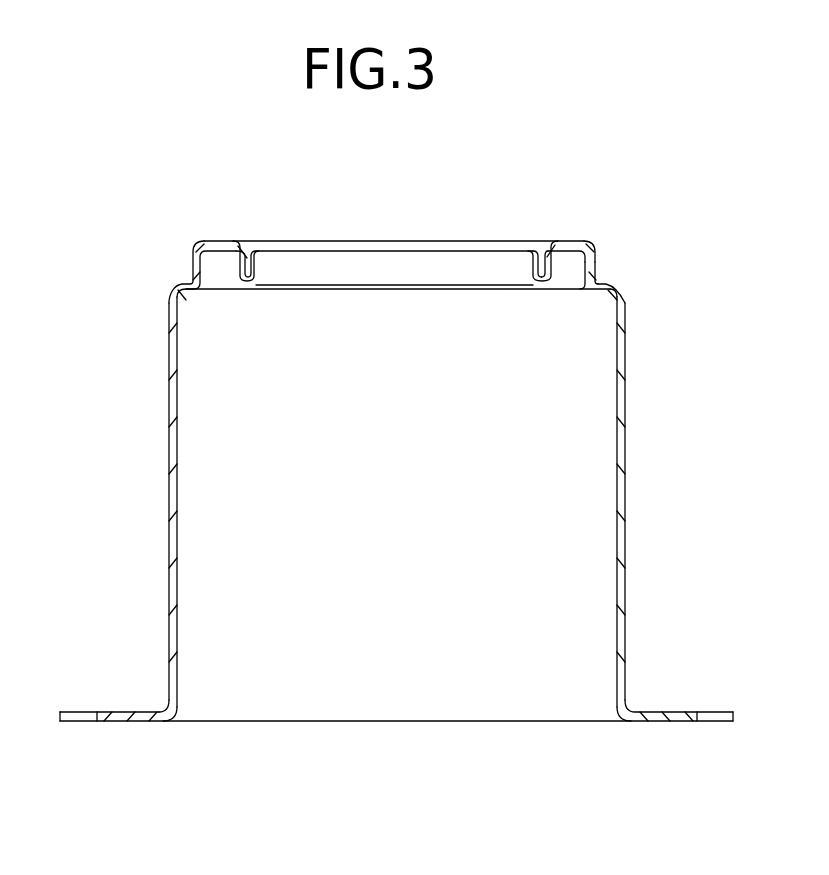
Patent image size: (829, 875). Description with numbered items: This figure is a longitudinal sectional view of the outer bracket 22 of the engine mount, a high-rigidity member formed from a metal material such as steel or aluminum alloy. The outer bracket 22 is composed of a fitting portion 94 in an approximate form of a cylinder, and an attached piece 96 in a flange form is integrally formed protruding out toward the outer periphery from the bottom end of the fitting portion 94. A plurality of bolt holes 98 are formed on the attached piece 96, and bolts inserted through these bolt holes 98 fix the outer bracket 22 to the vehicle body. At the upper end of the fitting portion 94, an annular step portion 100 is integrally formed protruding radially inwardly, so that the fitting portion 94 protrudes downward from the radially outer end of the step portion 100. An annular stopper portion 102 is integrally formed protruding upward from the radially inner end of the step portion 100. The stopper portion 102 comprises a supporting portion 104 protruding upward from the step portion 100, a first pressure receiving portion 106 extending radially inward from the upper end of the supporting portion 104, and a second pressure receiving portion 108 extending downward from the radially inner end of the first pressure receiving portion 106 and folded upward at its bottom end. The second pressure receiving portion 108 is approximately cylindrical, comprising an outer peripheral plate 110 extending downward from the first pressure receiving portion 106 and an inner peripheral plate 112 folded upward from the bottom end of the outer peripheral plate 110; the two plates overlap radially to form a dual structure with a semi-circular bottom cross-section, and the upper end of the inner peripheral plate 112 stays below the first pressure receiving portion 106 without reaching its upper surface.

The outer bracket 22 is at (673, 487).
The fitting portion 94 is at (175, 482).
The attached piece 96 is at (80, 712).
The bolt holes 98 is at (122, 722).
The step portion 100 is at (598, 284).
The stopper portion 102 is at (183, 267).
The supporting portion 104 is at (591, 270).
The first pressure receiving portion 106 is at (578, 242).
The second pressure receiving portion 108 is at (583, 197).
The outer peripheral plate 110 is at (548, 272).
The inner peripheral plate 112 is at (532, 267).